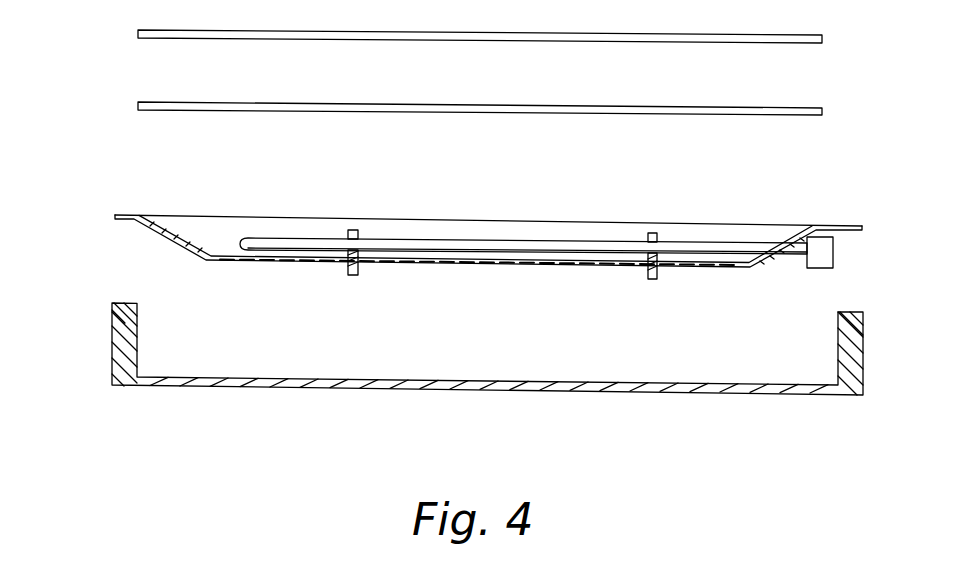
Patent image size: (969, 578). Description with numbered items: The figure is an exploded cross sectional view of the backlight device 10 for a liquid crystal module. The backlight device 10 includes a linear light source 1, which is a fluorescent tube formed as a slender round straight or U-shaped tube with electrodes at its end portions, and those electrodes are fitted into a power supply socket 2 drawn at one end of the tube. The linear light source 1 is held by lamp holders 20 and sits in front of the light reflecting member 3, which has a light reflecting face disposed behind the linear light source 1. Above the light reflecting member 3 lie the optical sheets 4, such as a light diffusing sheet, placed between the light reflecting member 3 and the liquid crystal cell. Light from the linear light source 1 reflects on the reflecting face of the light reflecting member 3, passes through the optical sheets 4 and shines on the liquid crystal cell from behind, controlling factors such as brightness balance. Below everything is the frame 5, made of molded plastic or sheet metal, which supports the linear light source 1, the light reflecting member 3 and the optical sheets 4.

The backlight device 10 is at (80, 0).
The optical sheets 4 is at (835, 33).
The light reflecting member 3 is at (790, 223).
The linear light source 1 is at (530, 242).
The lamp holders 20 is at (335, 219).
The power supply socket 2 is at (833, 255).
The frame 5 is at (863, 352).